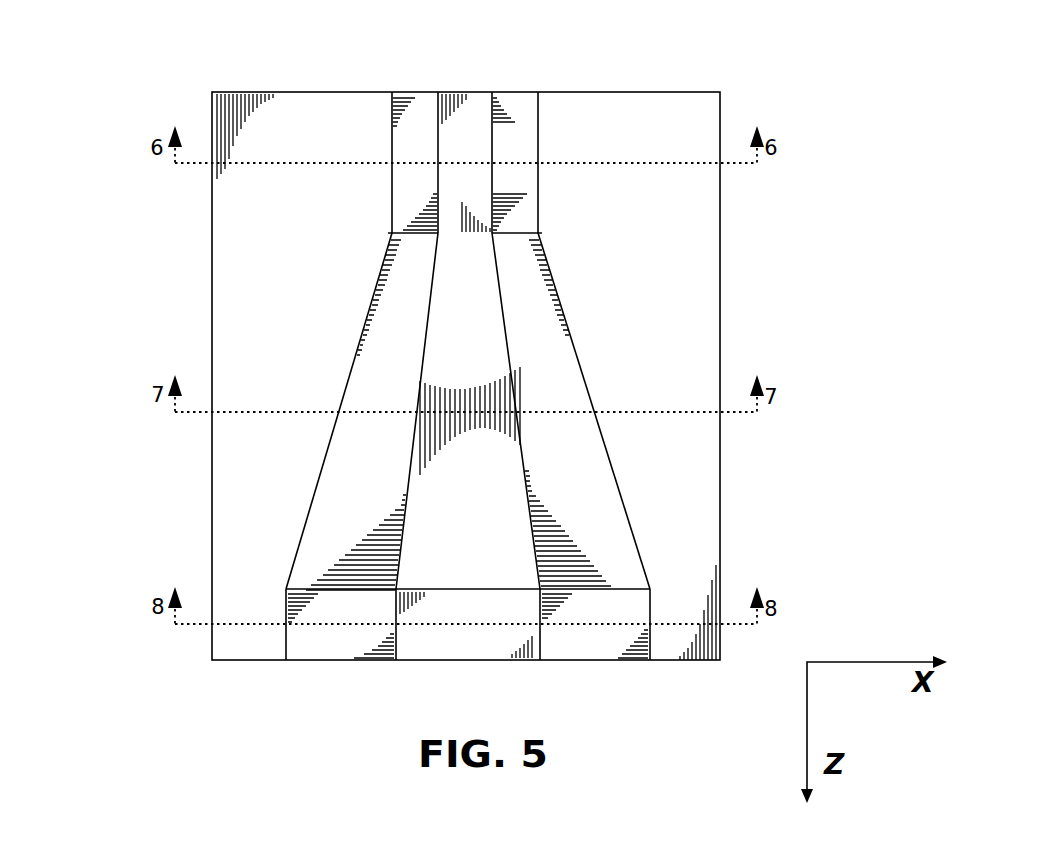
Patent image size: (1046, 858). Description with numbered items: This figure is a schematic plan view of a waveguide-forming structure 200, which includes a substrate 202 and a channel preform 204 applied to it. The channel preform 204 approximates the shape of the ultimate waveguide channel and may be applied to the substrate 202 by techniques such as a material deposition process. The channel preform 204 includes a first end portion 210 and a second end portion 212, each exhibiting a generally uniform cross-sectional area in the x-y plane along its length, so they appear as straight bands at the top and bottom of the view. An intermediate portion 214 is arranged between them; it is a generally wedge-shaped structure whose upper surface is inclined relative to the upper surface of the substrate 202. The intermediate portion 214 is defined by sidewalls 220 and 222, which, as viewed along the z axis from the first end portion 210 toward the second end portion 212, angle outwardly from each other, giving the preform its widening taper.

The waveguide-forming structure 200 is at (438, 332).
The substrate 202 is at (692, 118).
The channel preform 204 is at (462, 130).
The first end portion 210 is at (562, 143).
The second end portion 212 is at (676, 602).
The intermediate portion 214 is at (484, 411).
The sidewall 220 is at (352, 360).
The sidewall 222 is at (577, 357).